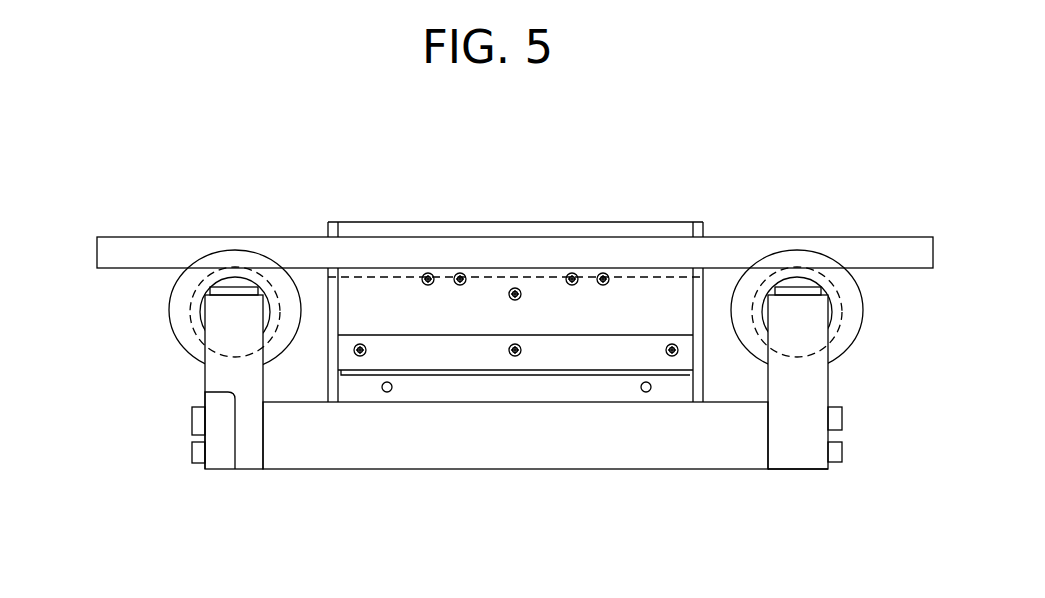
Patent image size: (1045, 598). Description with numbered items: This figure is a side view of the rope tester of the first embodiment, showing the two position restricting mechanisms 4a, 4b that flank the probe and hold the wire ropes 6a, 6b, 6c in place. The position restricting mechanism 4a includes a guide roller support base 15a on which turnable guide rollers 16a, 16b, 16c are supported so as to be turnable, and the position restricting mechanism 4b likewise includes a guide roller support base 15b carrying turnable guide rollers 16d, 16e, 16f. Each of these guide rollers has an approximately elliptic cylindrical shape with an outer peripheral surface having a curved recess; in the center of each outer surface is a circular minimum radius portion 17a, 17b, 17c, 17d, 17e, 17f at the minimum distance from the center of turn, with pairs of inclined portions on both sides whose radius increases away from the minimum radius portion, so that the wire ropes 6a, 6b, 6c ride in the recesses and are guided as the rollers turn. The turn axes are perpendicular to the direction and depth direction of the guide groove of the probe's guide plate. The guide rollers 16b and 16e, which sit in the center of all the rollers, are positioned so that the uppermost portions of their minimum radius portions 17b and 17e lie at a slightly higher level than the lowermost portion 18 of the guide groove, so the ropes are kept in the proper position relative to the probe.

The position restricting mechanism 4a is at (212, 415).
The position restricting mechanism 4b is at (793, 445).
The wire rope 6a is at (485, 204).
The wire rope 6b is at (485, 204).
The wire rope 6c is at (150, 260).
The guide roller support base 15a is at (222, 372).
The guide roller support base 15b is at (807, 387).
The turnable guide roller 16a is at (251, 240).
The turnable guide roller 16b is at (251, 240).
The turnable guide roller 16c is at (238, 257).
The turnable guide roller 16d is at (822, 237).
The turnable guide roller 16e is at (822, 237).
The turnable guide roller 16f is at (793, 260).
The minimum radius portion 17a is at (361, 259).
The minimum radius portion 17b is at (361, 259).
The minimum radius portion 17c is at (270, 283).
The minimum radius portion 17d is at (714, 242).
The minimum radius portion 17e is at (714, 242).
The minimum radius portion 17f is at (762, 282).
The lowermost portion of the guide groove 18 is at (543, 278).